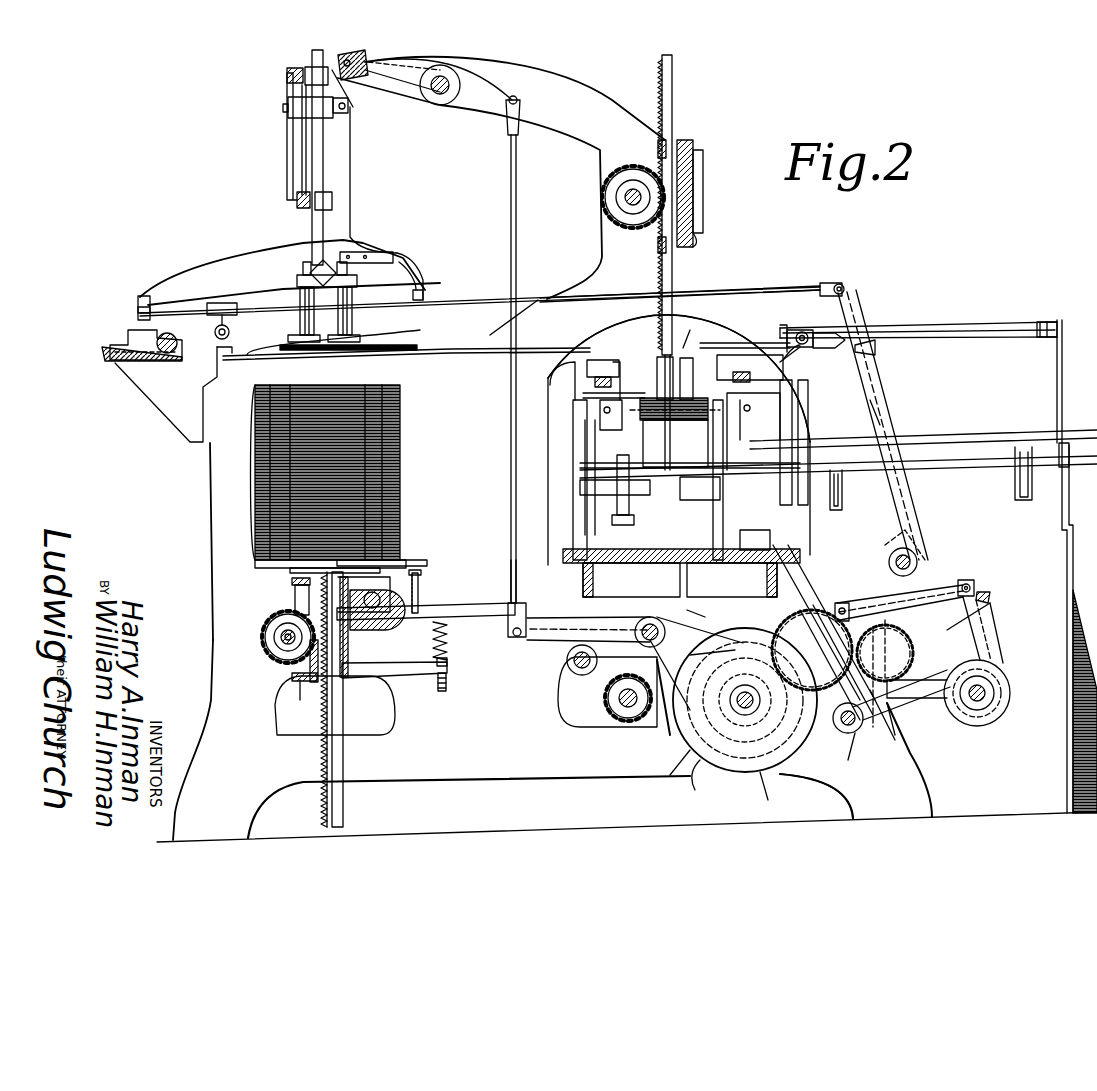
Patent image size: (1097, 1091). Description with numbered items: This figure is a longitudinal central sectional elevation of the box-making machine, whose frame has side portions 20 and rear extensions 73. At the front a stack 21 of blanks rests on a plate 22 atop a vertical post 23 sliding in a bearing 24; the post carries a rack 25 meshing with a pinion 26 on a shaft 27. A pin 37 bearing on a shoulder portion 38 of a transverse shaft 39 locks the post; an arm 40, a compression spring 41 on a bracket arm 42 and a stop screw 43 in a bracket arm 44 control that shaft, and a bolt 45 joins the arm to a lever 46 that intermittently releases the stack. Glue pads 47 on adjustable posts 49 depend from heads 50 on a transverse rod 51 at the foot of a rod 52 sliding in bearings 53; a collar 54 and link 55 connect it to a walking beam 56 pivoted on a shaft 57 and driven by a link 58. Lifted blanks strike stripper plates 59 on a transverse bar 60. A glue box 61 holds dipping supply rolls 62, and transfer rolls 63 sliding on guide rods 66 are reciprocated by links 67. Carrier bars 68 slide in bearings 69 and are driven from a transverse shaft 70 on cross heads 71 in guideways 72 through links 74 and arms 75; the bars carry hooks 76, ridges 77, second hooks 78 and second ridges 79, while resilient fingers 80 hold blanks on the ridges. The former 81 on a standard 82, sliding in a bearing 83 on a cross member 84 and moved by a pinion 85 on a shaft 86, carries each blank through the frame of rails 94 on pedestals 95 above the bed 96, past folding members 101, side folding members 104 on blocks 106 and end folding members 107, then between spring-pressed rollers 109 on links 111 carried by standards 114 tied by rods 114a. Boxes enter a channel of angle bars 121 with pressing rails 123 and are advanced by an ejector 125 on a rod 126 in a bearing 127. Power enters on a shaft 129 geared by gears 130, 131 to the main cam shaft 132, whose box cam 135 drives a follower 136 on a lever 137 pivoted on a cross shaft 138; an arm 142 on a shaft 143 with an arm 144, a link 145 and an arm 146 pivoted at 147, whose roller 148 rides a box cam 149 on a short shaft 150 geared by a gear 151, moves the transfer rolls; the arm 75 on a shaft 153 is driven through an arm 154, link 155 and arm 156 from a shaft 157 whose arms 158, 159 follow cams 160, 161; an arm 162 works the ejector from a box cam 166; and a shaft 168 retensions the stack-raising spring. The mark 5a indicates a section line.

The side portions 20 is at (920, 805).
The stack of blanks 21 is at (258, 458).
The plate 22 is at (255, 563).
The vertical post 23 is at (343, 703).
The bearing 24 is at (290, 583).
The rack 25 is at (318, 703).
The pinion 26 is at (266, 648).
The shaft 27 is at (277, 630).
The pin 37 is at (349, 628).
The shoulder portion 38 is at (380, 618).
The transverse shaft 39 is at (375, 596).
The arm 40 is at (482, 608).
The compression spring 41 is at (448, 640).
The bracket arm 42 is at (436, 690).
The stop screw 43 is at (420, 583).
The bracket arm 44 is at (410, 563).
The bolt 45 is at (506, 600).
The lever 46 is at (535, 625).
The glue applying pads 47 is at (350, 318).
The adjustable posts 49 is at (298, 330).
The heads 50 is at (302, 278).
The transverse rod 51 is at (318, 262).
The rod 52 is at (330, 166).
The bearings 53 is at (348, 108).
The collar 54 is at (288, 118).
The link 55 is at (370, 76).
The lever or walking beam 56 is at (486, 85).
The shaft 57 is at (440, 108).
The link 58 is at (510, 186).
The stripper plates 59 is at (405, 312).
The transverse bar 60 is at (385, 263).
The glue box 61 is at (112, 356).
The dipping supply rolls 62 is at (128, 332).
The transfer rolls 63 is at (218, 339).
The guide rods 66 is at (180, 303).
The links 67 is at (735, 290).
The carrier rods 68 is at (240, 362).
The guides or bearings 69 is at (596, 360).
The transverse shaft 70 is at (802, 325).
The cross heads 71 is at (828, 350).
The guideways 72 is at (930, 328).
The rear extensions 73 is at (1030, 322).
The links 74 is at (846, 312).
The arms 75 is at (858, 403).
The hook-like projections 76 is at (238, 356).
The ridge 77 is at (385, 350).
The second hook-like projections 78 is at (490, 335).
The second ridge 79 is at (548, 365).
The resilient fingers 80 is at (421, 275).
The former 81 is at (702, 478).
The standard 82 is at (675, 100).
The bearing 83 is at (693, 143).
The cross member 84 is at (704, 170).
The pinion 85 is at (633, 168).
The shaft 86 is at (633, 205).
The transverse rails 94 is at (783, 360).
The pedestals 95 is at (580, 500).
The bed 96 is at (712, 563).
The folding members 101 is at (728, 340).
The folding members 104 is at (583, 396).
The block 106 is at (603, 379).
The folding members 107 is at (660, 357).
The rollers 109 is at (664, 421).
The links 111 is at (770, 416).
The standards 114 is at (590, 430).
The tie rods 114a is at (600, 410).
The angle bars 121 is at (985, 468).
The rails 123 is at (985, 440).
The ejector 125 is at (632, 510).
The rod 126 is at (650, 563).
The bearing 127 is at (755, 551).
The shaft 129 is at (610, 692).
The gear 130 is at (598, 660).
The gear 131 is at (660, 720).
The main cam shaft 132 is at (740, 710).
The box cam 135 is at (710, 775).
The follower 136 is at (668, 780).
The lever 137 is at (565, 618).
The cross shaft 138 is at (650, 620).
The arm 142 is at (870, 350).
The shaft 143 is at (915, 553).
The arm 144 is at (957, 575).
The link 145 is at (995, 658).
The arm 146 is at (860, 725).
The pivot 147 is at (838, 580).
The roller 148 is at (892, 640).
The box cam 149 is at (940, 745).
The short shaft 150 is at (850, 745).
The gear 151 is at (925, 760).
The shaft 153 is at (1000, 685).
The arm 154 is at (985, 630).
The link 155 is at (850, 604).
The arm 156 is at (880, 625).
The shaft 157 is at (885, 748).
The arm 158 is at (790, 640).
The arm 159 is at (820, 775).
The cam 160 is at (712, 650).
The cam 161 is at (672, 725).
The arm 162 is at (805, 570).
The box cam 166 is at (765, 800).
The shaft 168 is at (560, 680).
The section line 5a is at (686, 465).